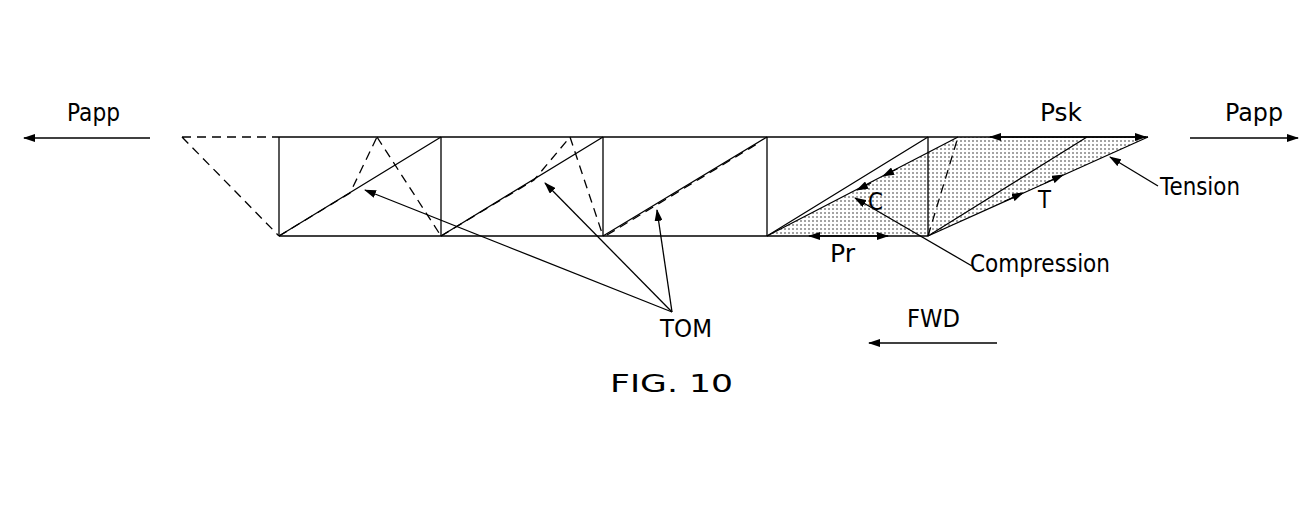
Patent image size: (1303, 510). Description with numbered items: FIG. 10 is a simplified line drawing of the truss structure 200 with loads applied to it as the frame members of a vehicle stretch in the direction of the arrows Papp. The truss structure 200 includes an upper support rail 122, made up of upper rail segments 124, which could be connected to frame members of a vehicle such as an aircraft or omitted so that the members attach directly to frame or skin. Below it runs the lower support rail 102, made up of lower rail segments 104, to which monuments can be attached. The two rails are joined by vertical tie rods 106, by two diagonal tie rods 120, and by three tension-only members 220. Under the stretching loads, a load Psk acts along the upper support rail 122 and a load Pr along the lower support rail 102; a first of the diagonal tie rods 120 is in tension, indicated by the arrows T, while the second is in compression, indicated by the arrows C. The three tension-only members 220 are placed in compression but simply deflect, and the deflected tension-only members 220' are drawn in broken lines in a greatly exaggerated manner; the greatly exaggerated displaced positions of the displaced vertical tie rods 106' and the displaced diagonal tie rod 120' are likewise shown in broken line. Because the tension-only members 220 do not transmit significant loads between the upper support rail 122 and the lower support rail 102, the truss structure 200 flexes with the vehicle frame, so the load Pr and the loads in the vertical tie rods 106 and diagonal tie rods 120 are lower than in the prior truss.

The lower support rail 102 is at (333, 240).
The lower rail segment 104 is at (388, 237).
The vertical tie rod 106 is at (574, 148).
The displaced vertical tie rod 106' is at (582, 174).
The diagonal tie rod 120 is at (950, 156).
The displaced diagonal tie rod 120' is at (957, 145).
The upper support rail 122 is at (423, 128).
The upper rail segment 124 is at (288, 137).
The truss structure 200 is at (447, 313).
The tension-only member 220 is at (523, 158).
The deflected tension-only member 220' is at (523, 167).